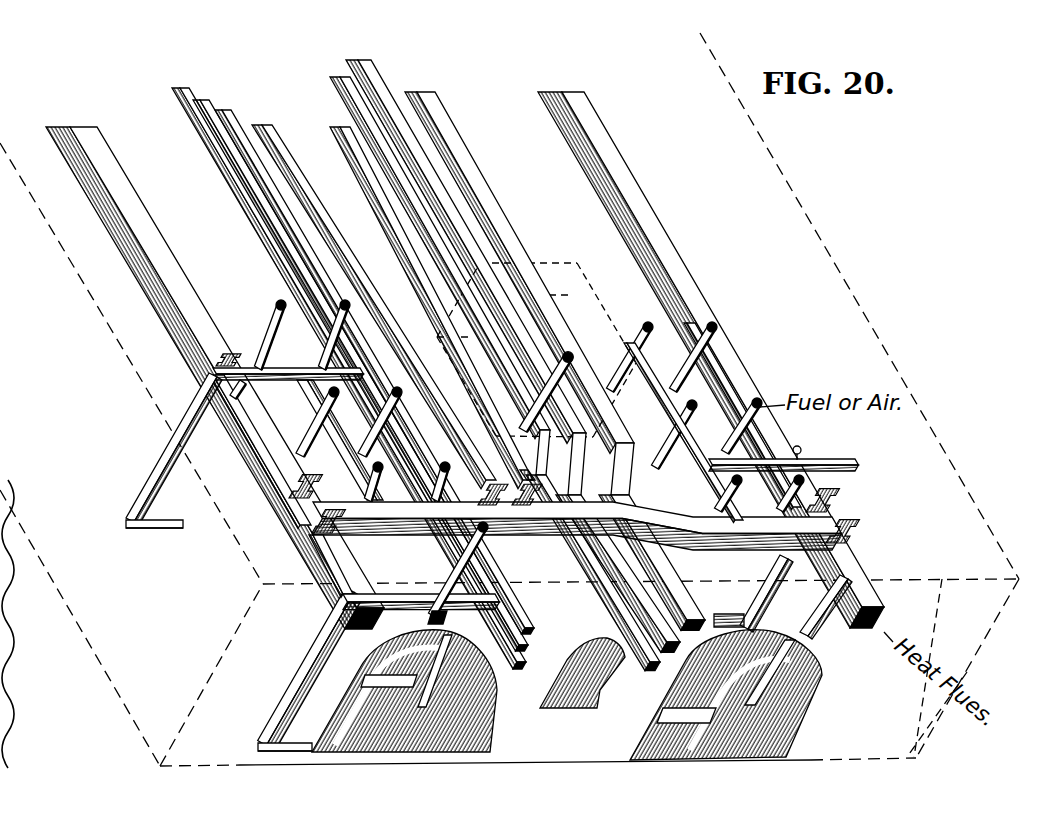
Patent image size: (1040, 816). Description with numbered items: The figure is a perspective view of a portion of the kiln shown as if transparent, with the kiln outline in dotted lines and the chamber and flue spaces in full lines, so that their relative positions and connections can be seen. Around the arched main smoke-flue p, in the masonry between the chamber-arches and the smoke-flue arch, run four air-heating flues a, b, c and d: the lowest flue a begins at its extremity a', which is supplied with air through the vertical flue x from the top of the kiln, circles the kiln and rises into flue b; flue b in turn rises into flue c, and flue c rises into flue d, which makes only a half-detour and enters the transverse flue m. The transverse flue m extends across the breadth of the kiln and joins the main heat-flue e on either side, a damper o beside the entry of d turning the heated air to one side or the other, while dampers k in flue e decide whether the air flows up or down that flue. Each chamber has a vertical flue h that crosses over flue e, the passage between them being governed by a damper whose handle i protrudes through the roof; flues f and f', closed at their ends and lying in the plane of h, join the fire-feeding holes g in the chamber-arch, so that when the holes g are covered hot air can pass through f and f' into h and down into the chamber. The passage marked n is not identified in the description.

The heating-air flue a is at (364, 367).
The extremity of flue a a' is at (519, 463).
The heating-air flue b is at (203, 104).
The heating-air flue c is at (228, 108).
The heating-air flue d is at (268, 122).
The main heat-flue e is at (168, 222).
The connecting flue f is at (462, 384).
The connecting flue f' is at (716, 388).
The fire-feeding hole g is at (826, 630).
The chamber flue h is at (164, 451).
The damper handle i is at (799, 443).
The damper k is at (212, 360).
The transverse flue m is at (577, 526).
The cross pipe n is at (838, 466).
The damper o is at (510, 483).
The main smoke-flue p is at (600, 695).
The vertical flue x is at (578, 356).